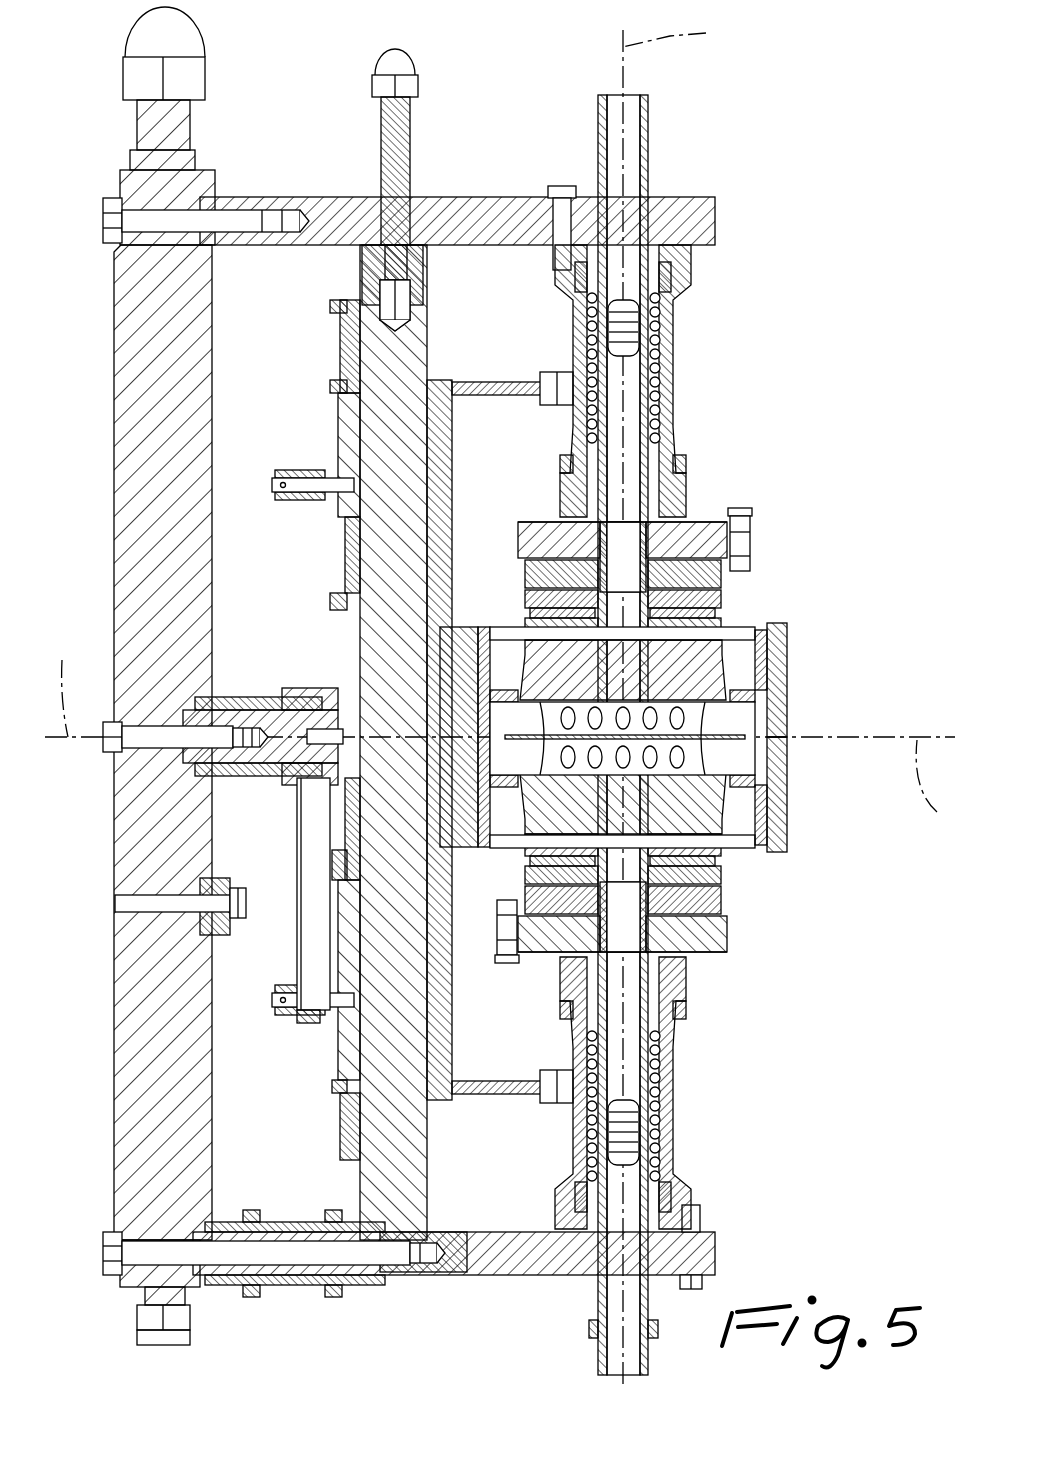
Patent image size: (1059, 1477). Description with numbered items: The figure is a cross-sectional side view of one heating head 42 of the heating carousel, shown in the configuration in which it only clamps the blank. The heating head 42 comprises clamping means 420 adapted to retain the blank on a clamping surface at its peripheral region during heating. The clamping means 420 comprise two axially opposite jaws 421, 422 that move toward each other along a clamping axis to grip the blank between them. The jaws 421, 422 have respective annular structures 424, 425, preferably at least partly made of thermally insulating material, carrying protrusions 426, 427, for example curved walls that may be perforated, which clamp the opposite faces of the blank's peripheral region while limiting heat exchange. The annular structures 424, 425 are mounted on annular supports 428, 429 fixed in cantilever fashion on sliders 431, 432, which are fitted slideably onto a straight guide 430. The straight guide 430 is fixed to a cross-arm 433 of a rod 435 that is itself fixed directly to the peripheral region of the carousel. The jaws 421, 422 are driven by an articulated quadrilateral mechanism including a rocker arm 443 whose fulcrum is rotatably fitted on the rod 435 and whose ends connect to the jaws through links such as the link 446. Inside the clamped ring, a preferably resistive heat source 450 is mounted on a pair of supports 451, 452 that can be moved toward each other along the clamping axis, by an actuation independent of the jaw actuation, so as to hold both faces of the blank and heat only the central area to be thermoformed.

The heating head 42 is at (500, 696).
The clamping means 420 is at (682, 702).
The jaw 421 is at (766, 799).
The jaw 422 is at (766, 675).
The annular structure 424 is at (762, 788).
The annular structure 425 is at (762, 695).
The protrusion 426 is at (700, 742).
The protrusion 427 is at (695, 715).
The annular support 428 is at (778, 832).
The annular support 429 is at (778, 643).
The straight guide 430 is at (402, 550).
The slider 431 is at (345, 1055).
The slider 432 is at (345, 435).
The cross-arm 433 is at (328, 218).
The rod 435 is at (160, 500).
The rocker arm 443 is at (250, 700).
The link 446 is at (312, 828).
The heat source 450 is at (523, 590).
The support 451 is at (699, 949).
The support 452 is at (699, 518).